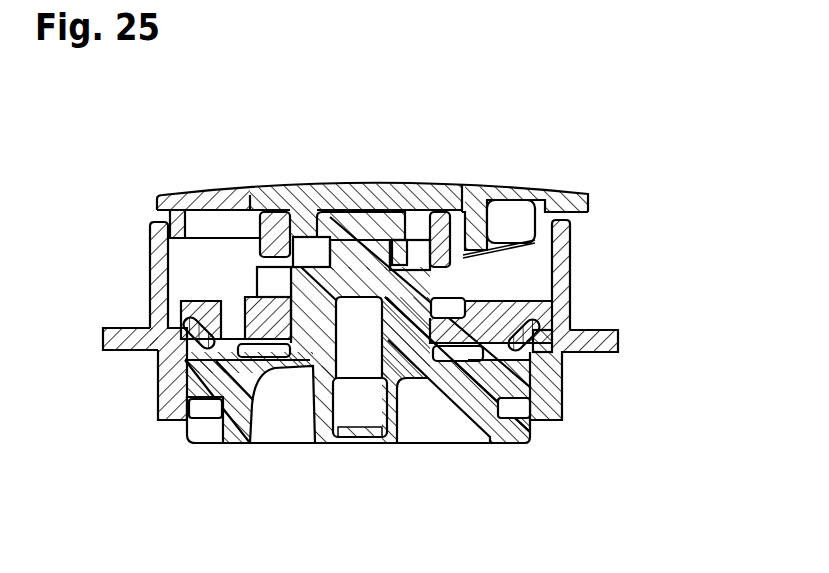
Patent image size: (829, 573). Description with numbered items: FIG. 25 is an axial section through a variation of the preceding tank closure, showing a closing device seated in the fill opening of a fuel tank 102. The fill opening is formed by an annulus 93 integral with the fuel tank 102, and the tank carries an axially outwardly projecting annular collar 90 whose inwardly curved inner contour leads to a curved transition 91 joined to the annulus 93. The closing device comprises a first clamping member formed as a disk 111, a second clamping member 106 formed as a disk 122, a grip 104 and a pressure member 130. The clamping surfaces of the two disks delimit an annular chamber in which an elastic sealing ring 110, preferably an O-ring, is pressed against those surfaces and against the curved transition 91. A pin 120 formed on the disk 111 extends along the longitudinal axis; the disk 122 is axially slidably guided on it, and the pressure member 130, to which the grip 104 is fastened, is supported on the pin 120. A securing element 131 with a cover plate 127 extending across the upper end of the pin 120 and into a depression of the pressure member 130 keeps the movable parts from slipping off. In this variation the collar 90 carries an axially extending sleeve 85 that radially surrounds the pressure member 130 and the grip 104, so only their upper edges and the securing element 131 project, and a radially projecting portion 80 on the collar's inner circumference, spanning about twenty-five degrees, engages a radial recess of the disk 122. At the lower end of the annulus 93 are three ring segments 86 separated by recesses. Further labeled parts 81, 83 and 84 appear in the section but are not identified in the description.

The radially projecting portion 80 is at (175, 320).
The sealing ring 81 is at (155, 235).
The lower body left portion 83 is at (205, 437).
The lower body right portion 84 is at (502, 437).
The sleeve 85 is at (567, 247).
The ring segments 86 is at (190, 410).
The annular collar 90 is at (165, 318).
The curved transition 91 is at (567, 360).
The annulus 93 is at (555, 392).
The fuel tank 102 is at (595, 333).
The grip 104 is at (530, 190).
The second clamping member 106 is at (522, 287).
The sealing ring 110 is at (190, 358).
The disk 111 is at (280, 370).
The pin 120 is at (327, 337).
The disk 122 is at (237, 310).
The cover plate 127 is at (398, 185).
The pressure member 130 is at (212, 188).
The securing element 131 is at (316, 186).